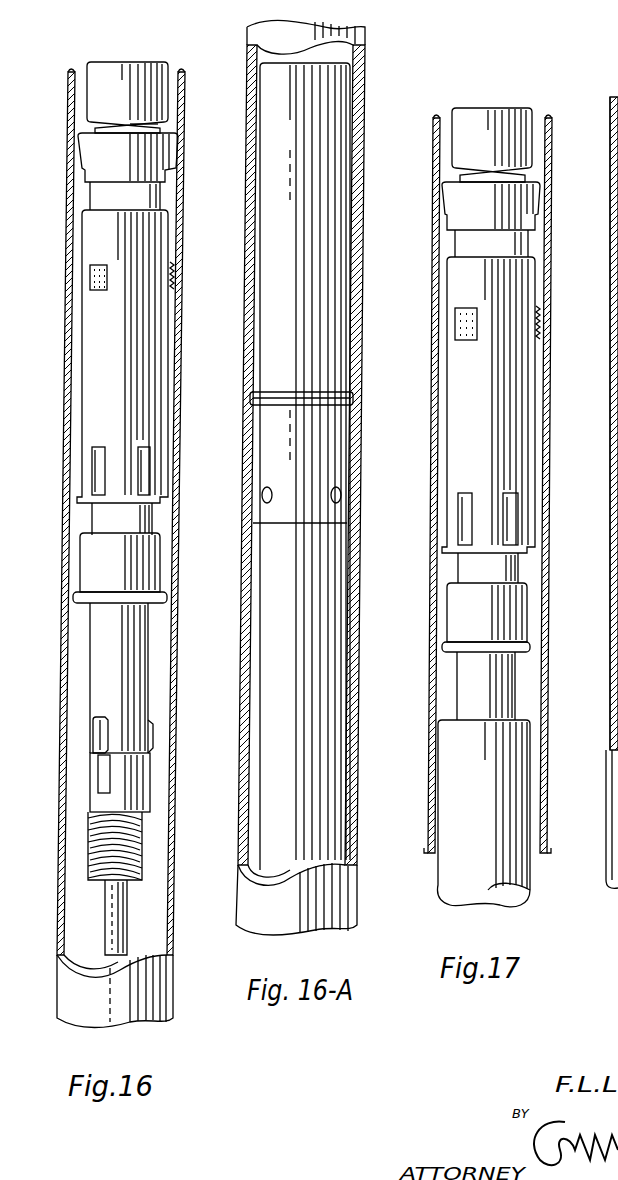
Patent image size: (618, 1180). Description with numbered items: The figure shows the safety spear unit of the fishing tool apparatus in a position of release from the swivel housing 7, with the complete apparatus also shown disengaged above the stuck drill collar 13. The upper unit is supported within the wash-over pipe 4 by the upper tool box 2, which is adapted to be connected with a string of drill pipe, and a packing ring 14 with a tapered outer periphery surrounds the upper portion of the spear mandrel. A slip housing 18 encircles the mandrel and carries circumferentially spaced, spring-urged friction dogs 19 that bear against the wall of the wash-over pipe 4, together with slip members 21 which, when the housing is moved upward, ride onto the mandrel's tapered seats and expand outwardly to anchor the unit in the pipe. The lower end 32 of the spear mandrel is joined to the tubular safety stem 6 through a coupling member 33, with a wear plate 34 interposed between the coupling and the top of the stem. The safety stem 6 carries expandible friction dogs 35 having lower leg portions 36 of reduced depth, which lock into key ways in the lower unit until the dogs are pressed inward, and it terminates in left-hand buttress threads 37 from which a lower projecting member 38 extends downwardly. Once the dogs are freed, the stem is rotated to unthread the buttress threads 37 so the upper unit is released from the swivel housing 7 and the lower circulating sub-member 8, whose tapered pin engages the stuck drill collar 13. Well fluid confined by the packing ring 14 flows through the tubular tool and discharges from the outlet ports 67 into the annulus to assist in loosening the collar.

In FIG. 16, the upper tool box 2 is at (160, 92).
In FIG. 17, the upper tool box 2 is at (525, 140).
In FIG. 16, the wash-over pipe 4 is at (180, 355).
In FIG. 16A, the wash-over pipe 4 is at (362, 232).
In FIG. 17, the wash-over pipe 4 is at (488, 484).
In FIG. 16, the safety stem 6 is at (92, 645).
In FIG. 17, the safety stem 6 is at (510, 685).
In FIG. 16A, the swivel barrel or housing 7 is at (345, 97).
In FIG. 17, the swivel barrel or housing 7 is at (518, 798).
In FIG. 16A, the lower circulating sub-member 8 is at (340, 430).
In FIG. 16A, the stuck drill collar 13 is at (340, 570).
In FIG. 16, the packing ring 14 is at (168, 150).
In FIG. 17, the packing ring 14 is at (540, 200).
In FIG. 16, the slip housing or tubular cage member 18 is at (160, 243).
In FIG. 17, the slip housing or tubular cage member 18 is at (530, 270).
In FIG. 16, the friction dogs 19 is at (92, 475).
In FIG. 17, the friction dogs 19 is at (515, 512).
In FIG. 16, the slip member 21 is at (88, 278).
In FIG. 17, the slip member 21 is at (538, 318).
In FIG. 16, the lower end of the spear mandrel 32 is at (148, 515).
In FIG. 16, the coupling member 33 is at (155, 570).
In FIG. 17, the coupling member 33 is at (520, 613).
In FIG. 16, the wear plate 34 is at (73, 598).
In FIG. 16, the expandible friction dogs 35 is at (93, 735).
In FIG. 16, the lower leg portions 36 is at (100, 778).
In FIG. 16, the buttress threads 37 is at (90, 838).
In FIG. 16, the lower projecting member 38 is at (120, 915).
In FIG. 16A, the outlet ports 67 is at (337, 493).